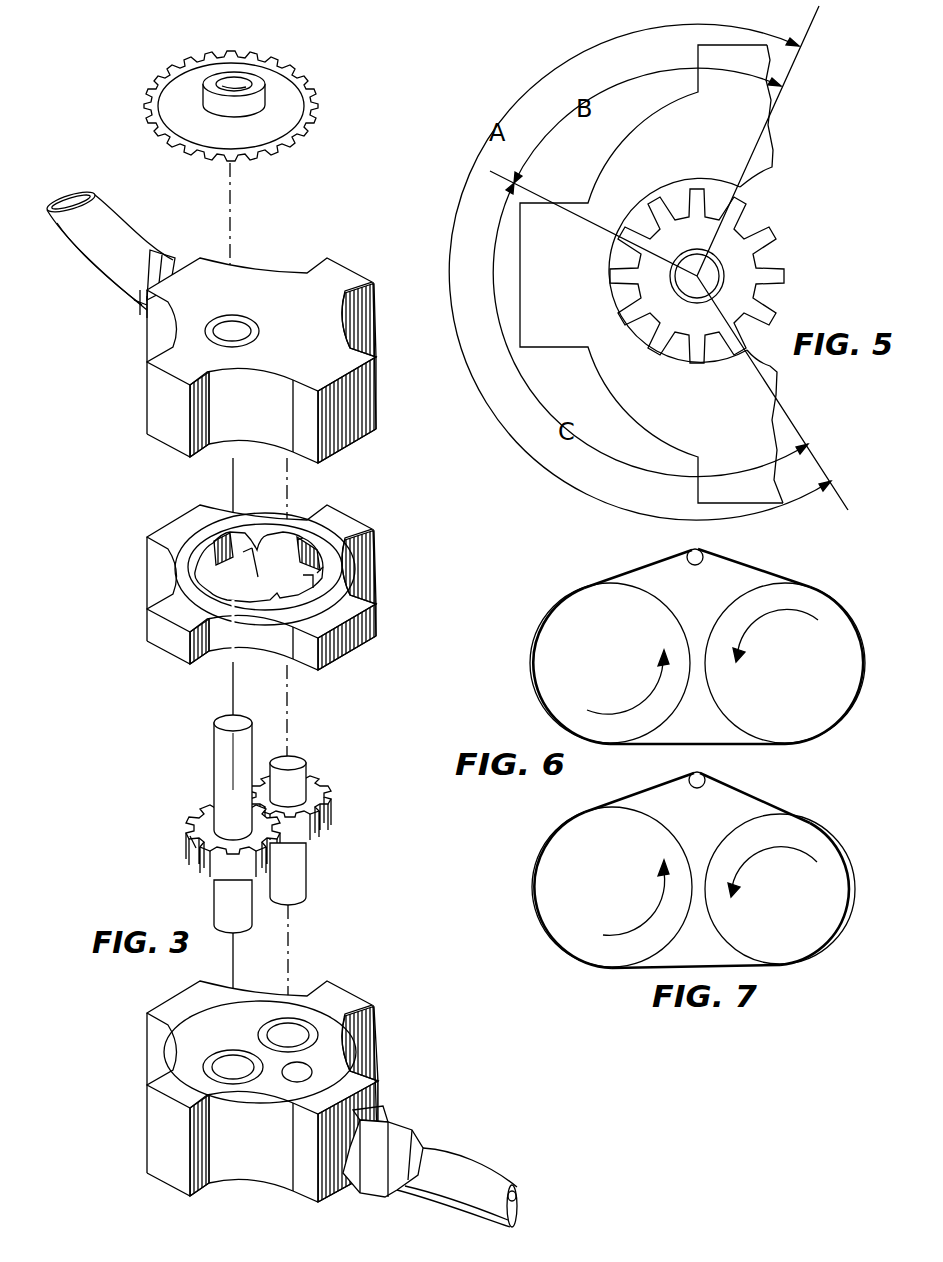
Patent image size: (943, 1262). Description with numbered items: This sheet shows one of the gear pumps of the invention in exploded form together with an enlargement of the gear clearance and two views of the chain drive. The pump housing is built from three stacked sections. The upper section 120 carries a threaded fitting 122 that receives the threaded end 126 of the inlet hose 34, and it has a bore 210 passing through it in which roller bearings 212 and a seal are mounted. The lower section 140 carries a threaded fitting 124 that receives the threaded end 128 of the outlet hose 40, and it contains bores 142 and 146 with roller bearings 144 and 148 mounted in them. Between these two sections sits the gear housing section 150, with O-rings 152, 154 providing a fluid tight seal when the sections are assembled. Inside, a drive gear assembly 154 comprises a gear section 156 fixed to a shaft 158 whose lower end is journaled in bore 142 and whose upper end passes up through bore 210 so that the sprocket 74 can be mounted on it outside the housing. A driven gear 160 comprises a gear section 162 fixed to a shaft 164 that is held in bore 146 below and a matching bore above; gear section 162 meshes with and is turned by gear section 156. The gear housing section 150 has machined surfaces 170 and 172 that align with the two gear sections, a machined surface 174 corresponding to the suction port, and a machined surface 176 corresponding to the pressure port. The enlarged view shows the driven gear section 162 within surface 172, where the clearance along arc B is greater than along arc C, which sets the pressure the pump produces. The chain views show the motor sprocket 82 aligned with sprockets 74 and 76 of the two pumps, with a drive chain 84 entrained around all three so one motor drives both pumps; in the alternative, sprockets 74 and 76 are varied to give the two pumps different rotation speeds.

In FIG. 3, the inlet hose 34 is at (73, 250).
In FIG. 3, the outlet hose 40 is at (480, 1180).
In FIG. 3, the sprocket 74 is at (277, 83).
In FIG. 6, the sprocket 74 is at (618, 680).
In FIG. 7, the sprocket 74 is at (618, 903).
In FIG. 6, the sprocket 76 is at (793, 680).
In FIG. 7, the sprocket 76 is at (793, 903).
In FIG. 6, the sprocket 82 is at (695, 566).
In FIG. 7, the sprocket 82 is at (696, 788).
In FIG. 6, the drive chain 84 is at (777, 573).
In FIG. 7, the drive chain 84 is at (775, 803).
In FIG. 3, the upper section 120 is at (232, 360).
In FIG. 3, the threaded fitting 122 is at (140, 316).
In FIG. 3, the threaded fitting 124 is at (385, 1110).
In FIG. 3, the threaded end 126 is at (125, 288).
In FIG. 3, the threaded end 128 is at (418, 1136).
In FIG. 3, the lower section 140 is at (152, 1130).
In FIG. 3, the bore 142 is at (233, 1080).
In FIG. 3, the roller bearing 144 is at (215, 1062).
In FIG. 3, the bore 146 is at (295, 1020).
In FIG. 3, the roller bearing 148 is at (300, 1025).
In FIG. 3, the gear housing section 150 is at (385, 637).
In FIG. 3, the O-ring 152 is at (172, 616).
In FIG. 3, the drive gear assembly 154 is at (303, 1065).
In FIG. 3, the gear section 156 is at (185, 832).
In FIG. 3, the shaft 158 is at (212, 760).
In FIG. 3, the driven gear 160 is at (271, 824).
In FIG. 3, the gear section 162 is at (340, 812).
In FIG. 3, the shaft 164 is at (310, 880).
In FIG. 3, the machined surface 170 is at (203, 580).
In FIG. 3, the machined surface 172 is at (297, 540).
In FIG. 5, the machined surface 172 is at (697, 254).
In FIG. 3, the machined surface 174 is at (243, 552).
In FIG. 3, the machined surface 176 is at (340, 578).
In FIG. 3, the bore 210 is at (247, 322).
In FIG. 3, the roller bearings 212 is at (255, 338).